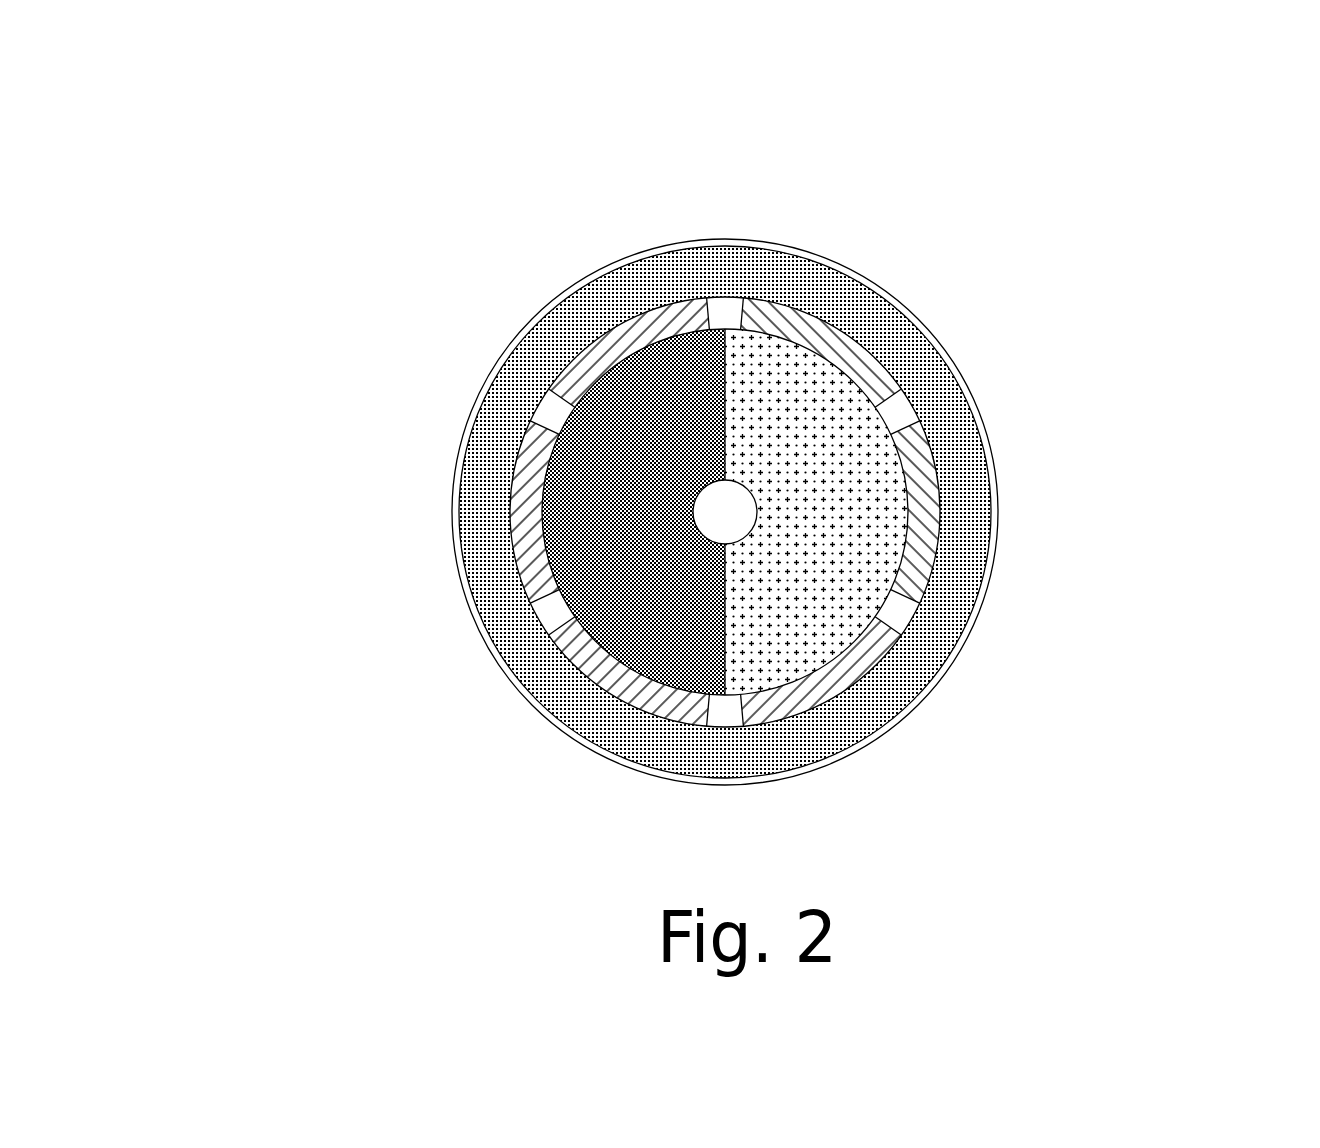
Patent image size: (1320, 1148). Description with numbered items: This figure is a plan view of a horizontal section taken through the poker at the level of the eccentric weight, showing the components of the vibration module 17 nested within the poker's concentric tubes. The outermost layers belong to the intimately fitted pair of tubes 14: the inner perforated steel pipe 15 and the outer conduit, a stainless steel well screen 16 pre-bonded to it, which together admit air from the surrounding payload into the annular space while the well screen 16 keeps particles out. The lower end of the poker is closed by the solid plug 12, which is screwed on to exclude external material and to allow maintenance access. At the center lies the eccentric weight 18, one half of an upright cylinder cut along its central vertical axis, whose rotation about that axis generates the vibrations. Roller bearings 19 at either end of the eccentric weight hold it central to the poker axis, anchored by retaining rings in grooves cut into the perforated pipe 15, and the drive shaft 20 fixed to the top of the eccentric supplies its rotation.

The solid plug 12 is at (942, 690).
The pair of tubes 14 is at (680, 333).
The inner perforated steel pipe 15 is at (545, 617).
The stainless steel well screen 16 is at (958, 440).
The vibration module 17 is at (582, 428).
The eccentric weight 18 is at (835, 540).
The roller bearings 19 is at (611, 463).
The drive shaft 20 is at (738, 498).